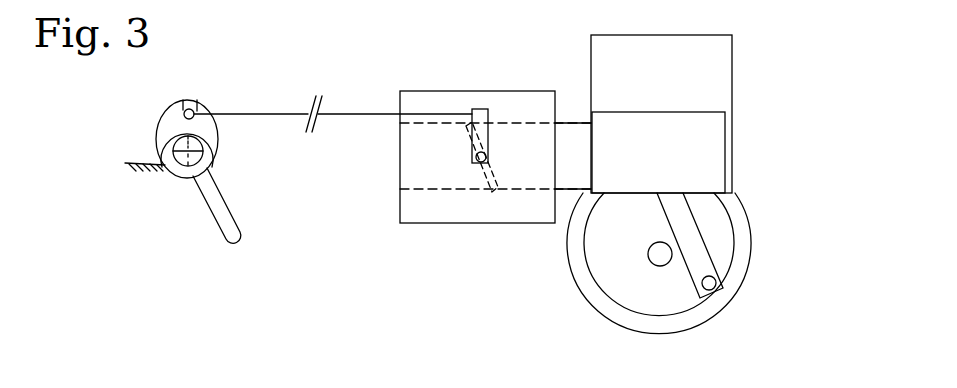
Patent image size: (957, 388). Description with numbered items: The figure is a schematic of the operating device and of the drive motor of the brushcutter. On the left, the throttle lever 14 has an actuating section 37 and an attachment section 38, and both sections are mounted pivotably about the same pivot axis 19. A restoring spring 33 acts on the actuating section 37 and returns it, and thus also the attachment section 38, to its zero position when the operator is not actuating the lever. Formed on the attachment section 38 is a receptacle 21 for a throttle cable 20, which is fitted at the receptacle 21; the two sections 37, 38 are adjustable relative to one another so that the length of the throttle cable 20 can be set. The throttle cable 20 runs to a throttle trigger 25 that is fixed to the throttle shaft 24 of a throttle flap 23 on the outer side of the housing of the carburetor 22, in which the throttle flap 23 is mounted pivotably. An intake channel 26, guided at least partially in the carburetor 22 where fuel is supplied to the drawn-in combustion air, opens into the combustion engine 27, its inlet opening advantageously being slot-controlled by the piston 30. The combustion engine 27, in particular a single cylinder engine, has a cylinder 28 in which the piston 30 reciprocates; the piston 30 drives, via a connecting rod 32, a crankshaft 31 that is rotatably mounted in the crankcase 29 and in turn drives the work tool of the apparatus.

The throttle lever 14 is at (172, 182).
The pivot axis 19 is at (192, 153).
The throttle cable 20 is at (272, 112).
The receptacle 21 is at (183, 114).
The carburetor 22 is at (507, 97).
The throttle flap 23 is at (491, 192).
The throttle shaft 24 is at (476, 160).
The throttle trigger 25 is at (479, 108).
The intake channel 26 is at (567, 130).
The combustion engine 27 is at (699, 107).
The cylinder 28 is at (733, 92).
The crankcase 29 is at (570, 268).
The piston 30 is at (708, 151).
The crankshaft 31 is at (652, 262).
The connecting rod 32 is at (698, 255).
The restoring spring 33 is at (162, 162).
The actuating section 37 is at (231, 221).
The attachment section 38 is at (200, 105).